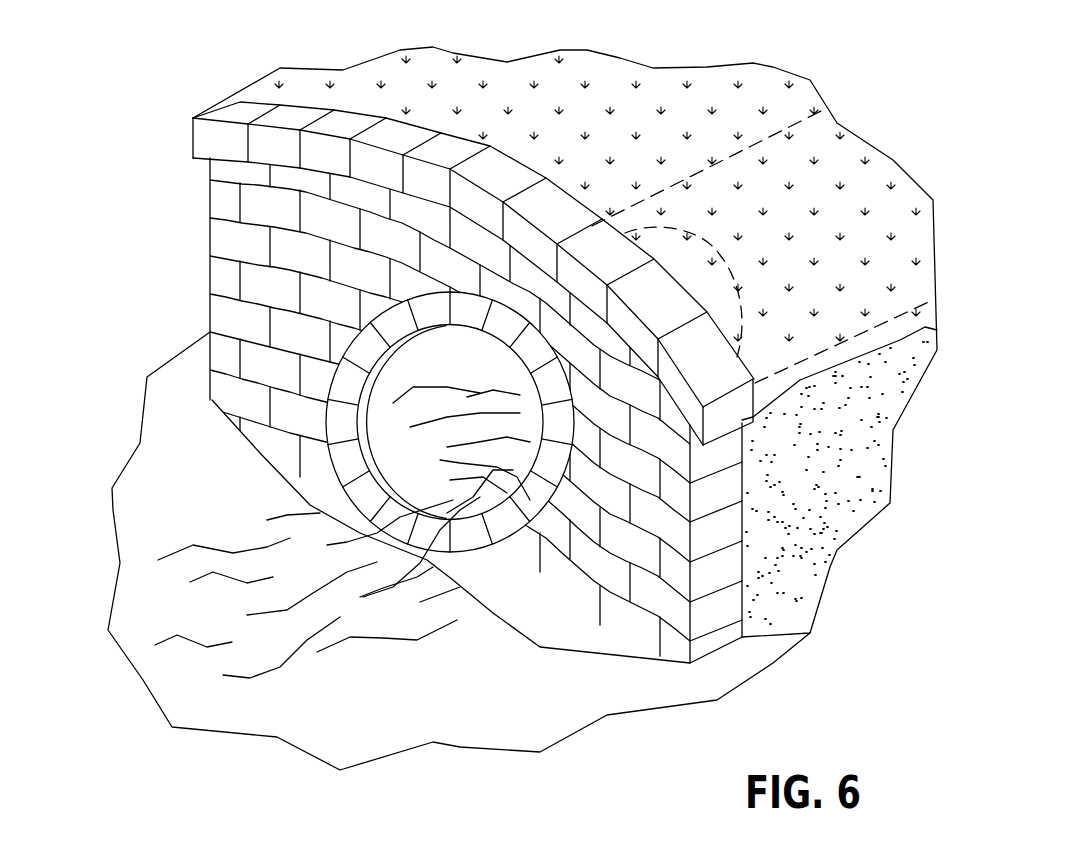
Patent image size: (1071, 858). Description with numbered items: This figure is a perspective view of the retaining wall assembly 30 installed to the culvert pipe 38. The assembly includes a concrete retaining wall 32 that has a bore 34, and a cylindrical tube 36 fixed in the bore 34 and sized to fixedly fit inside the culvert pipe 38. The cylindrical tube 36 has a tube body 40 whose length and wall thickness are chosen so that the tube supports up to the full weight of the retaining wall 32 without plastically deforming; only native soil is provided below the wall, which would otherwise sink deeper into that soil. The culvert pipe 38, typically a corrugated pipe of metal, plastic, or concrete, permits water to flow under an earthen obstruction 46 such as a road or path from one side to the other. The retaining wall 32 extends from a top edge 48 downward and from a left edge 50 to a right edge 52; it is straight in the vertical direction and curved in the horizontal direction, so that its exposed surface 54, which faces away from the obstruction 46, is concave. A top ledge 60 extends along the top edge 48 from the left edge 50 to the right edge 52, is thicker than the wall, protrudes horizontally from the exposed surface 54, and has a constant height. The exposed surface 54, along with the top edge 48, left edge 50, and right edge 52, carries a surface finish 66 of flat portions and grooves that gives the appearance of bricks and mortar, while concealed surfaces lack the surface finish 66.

The retaining wall assembly 30 is at (421, 390).
The retaining wall 32 is at (415, 469).
The bore 34 is at (373, 422).
The cylindrical tube 36 is at (459, 551).
The culvert pipe 38 is at (762, 194).
The tube body 40 is at (763, 227).
The earthen obstruction 46 is at (565, 318).
The top edge 48 is at (473, 189).
The left edge 50 is at (149, 279).
The right edge 52 is at (827, 475).
The exposed surface 54 is at (451, 590).
The top ledge 60 is at (421, 222).
The surface finish 66 is at (694, 590).